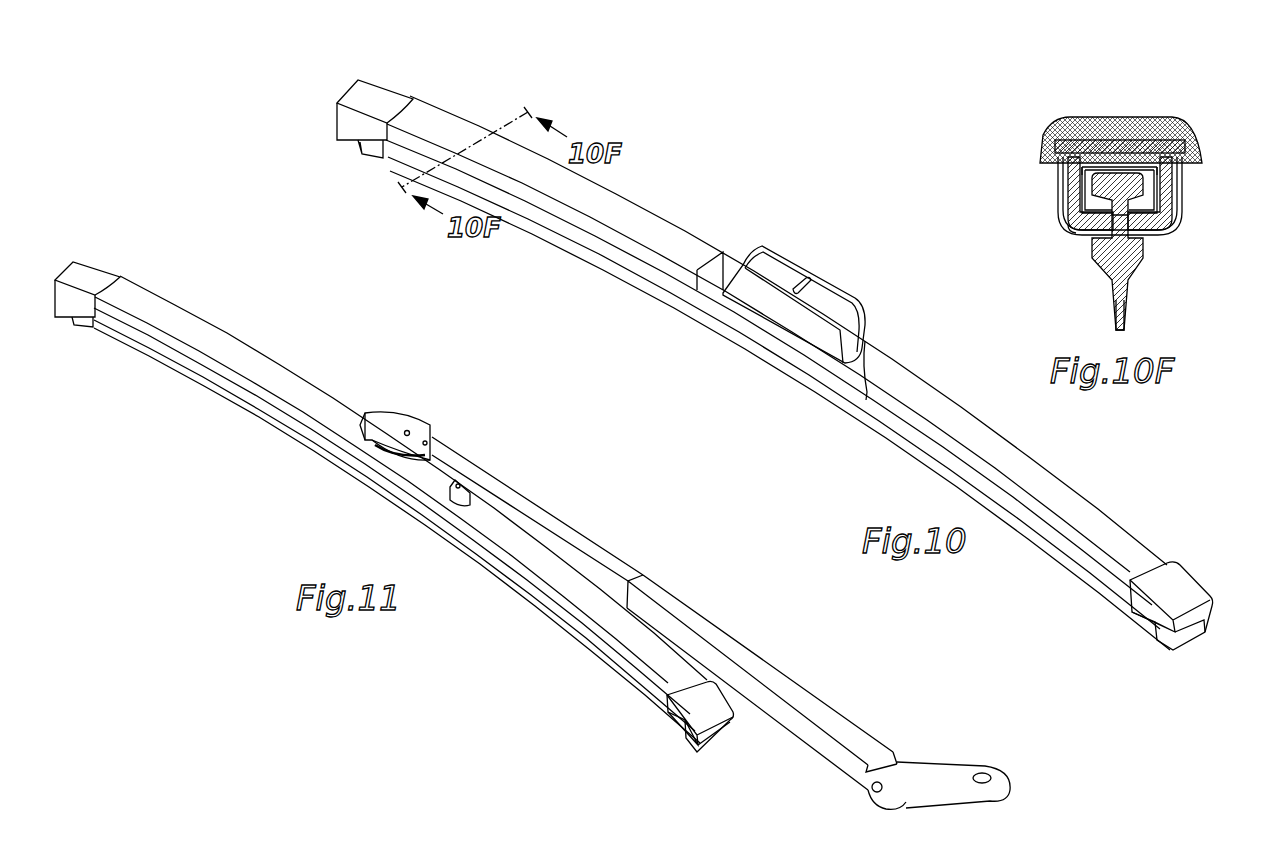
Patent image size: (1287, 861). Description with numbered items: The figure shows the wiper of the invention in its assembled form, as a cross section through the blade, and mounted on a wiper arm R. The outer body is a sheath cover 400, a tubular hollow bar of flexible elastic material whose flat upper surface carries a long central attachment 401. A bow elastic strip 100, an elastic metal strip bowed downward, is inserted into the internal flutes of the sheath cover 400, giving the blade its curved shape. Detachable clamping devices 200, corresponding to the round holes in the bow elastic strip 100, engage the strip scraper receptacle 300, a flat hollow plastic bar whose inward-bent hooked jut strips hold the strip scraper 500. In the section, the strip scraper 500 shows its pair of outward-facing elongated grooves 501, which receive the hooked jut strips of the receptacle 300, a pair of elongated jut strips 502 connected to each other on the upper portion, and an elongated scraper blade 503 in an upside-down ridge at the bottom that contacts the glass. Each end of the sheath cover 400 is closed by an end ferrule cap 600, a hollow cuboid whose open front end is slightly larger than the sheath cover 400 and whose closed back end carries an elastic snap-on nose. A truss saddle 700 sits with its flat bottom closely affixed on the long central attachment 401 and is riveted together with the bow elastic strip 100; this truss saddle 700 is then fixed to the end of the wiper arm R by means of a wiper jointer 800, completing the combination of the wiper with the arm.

In FIG. 10F, the bow elastic strip 100 is at (1188, 147).
In FIG. 10F, the detachable clamping device 200 is at (1168, 195).
In FIG. 10F, the strip scraper receptacle 300 is at (1163, 223).
In FIG. 10, the sheath cover 400 is at (657, 233).
In FIG. 10F, the sheath cover 400 is at (1078, 120).
In FIG. 11, the sheath cover 400 is at (243, 358).
In FIG. 10, the long central attachment 401 is at (870, 357).
In FIG. 10F, the strip scraper 500 is at (1128, 262).
In FIG. 10F, the elongated groove 501 is at (1075, 235).
In FIG. 10F, the elongated jut strip 502 is at (1100, 193).
In FIG. 10, the scraper blade 503 is at (640, 283).
In FIG. 10F, the scraper blade 503 is at (1118, 315).
In FIG. 11, the scraper blade 503 is at (273, 425).
In FIG. 10, the end ferrule cap 600 is at (375, 92).
In FIG. 10F, the end ferrule cap 600 is at (1113, 117).
In FIG. 11, the end ferrule cap 600 is at (83, 277).
In FIG. 10, the truss saddle 700 is at (775, 265).
In FIG. 11, the wiper jointer 800 is at (390, 428).
In FIG. 11, the wiper arm R is at (787, 688).